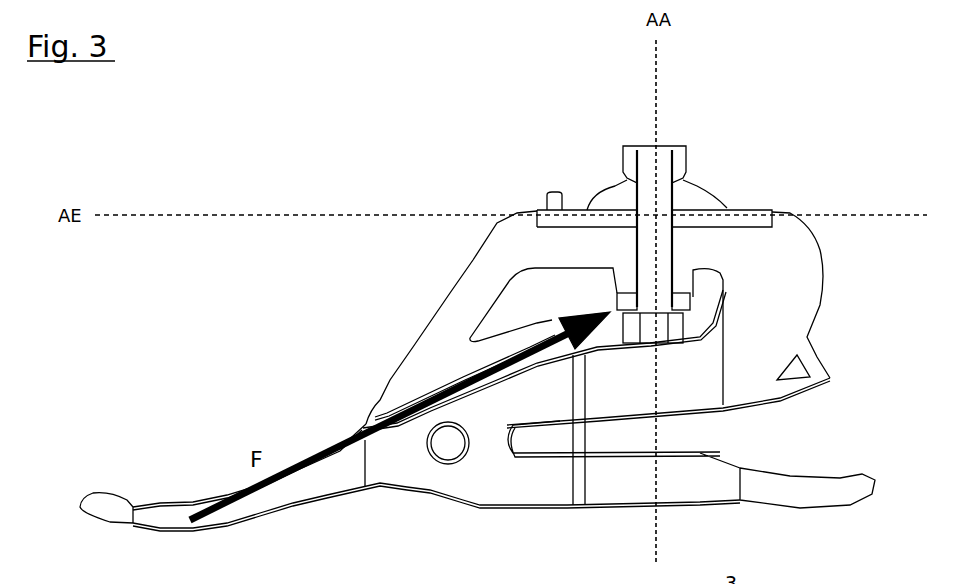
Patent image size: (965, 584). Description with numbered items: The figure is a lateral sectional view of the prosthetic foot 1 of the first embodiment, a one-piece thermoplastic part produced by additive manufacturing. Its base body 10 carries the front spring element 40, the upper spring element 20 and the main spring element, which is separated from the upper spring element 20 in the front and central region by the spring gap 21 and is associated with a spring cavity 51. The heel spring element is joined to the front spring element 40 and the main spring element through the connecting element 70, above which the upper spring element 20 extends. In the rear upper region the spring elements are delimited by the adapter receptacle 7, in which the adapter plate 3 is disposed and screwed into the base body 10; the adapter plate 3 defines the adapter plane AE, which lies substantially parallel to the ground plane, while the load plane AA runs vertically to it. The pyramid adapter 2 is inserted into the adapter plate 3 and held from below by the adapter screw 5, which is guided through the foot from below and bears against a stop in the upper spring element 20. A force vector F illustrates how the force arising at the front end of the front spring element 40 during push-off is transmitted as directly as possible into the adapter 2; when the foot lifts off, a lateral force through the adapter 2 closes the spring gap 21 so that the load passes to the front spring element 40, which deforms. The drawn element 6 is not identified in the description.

The prosthetic foot 1 is at (320, 366).
The pyramid adapter 2 is at (622, 130).
The adapter plate 3 is at (745, 180).
The adapter screw 5 is at (612, 240).
The housing dome 6 is at (710, 147).
The adapter receptacle 7 is at (512, 210).
The base body 10 is at (441, 242).
The upper spring element 20 is at (428, 287).
The spring gap 21 is at (353, 410).
The front spring element 40 is at (133, 470).
The spring cavity 51 is at (740, 273).
The connecting element 70 is at (401, 511).